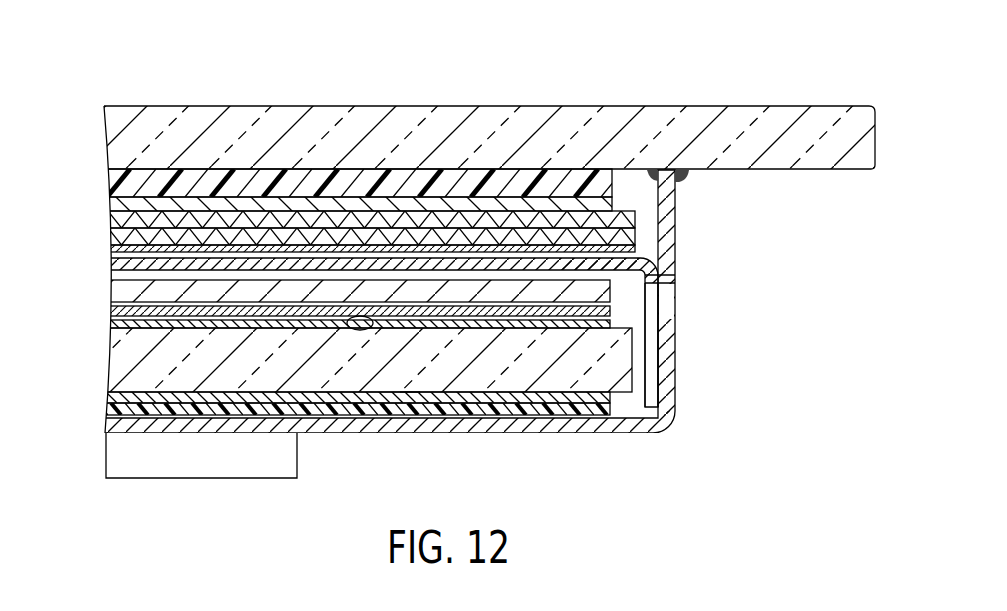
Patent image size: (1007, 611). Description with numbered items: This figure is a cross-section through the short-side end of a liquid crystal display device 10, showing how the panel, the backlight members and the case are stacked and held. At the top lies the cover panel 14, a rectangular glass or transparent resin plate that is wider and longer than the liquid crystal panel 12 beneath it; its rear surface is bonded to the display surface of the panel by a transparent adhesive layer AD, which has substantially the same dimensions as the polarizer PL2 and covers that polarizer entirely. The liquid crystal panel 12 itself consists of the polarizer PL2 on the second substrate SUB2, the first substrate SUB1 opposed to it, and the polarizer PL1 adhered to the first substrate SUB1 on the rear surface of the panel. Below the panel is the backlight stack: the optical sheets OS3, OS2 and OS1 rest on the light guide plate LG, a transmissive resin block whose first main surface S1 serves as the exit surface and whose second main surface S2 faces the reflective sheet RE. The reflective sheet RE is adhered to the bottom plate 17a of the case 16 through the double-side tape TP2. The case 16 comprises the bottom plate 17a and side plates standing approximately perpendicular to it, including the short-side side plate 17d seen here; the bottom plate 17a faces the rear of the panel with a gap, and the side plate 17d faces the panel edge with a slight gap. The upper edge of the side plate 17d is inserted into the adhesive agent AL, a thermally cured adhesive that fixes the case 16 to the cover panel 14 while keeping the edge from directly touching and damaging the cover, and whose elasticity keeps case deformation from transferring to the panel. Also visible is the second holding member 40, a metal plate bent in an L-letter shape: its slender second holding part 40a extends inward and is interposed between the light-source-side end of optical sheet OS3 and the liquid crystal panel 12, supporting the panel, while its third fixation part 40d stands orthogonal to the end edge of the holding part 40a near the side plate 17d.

The display device 10 is at (650, 82).
The liquid crystal panel 12 is at (328, 172).
The cover panel 14 is at (243, 116).
The case 16 is at (417, 347).
The bottom plate 17a is at (485, 423).
The side plate 17d is at (668, 238).
The second holding member 40 is at (420, 237).
The second holding part 40a is at (602, 262).
The third fixation part 40d is at (650, 366).
The adhesive layer AD is at (163, 183).
The adhesive agent AL is at (680, 178).
The polarizer PL2 is at (112, 203).
The second substrate SUB2 is at (115, 218).
The first substrate SUB1 is at (120, 243).
The polarizer PL1 is at (115, 248).
The optical sheet OS3 is at (105, 283).
The optical sheet OS2 is at (106, 309).
The optical sheet OS1 is at (104, 327).
The light guide plate LG is at (104, 364).
The reflective sheet RE is at (108, 398).
The double-side tape TP2 is at (104, 416).
The first main surface S1 is at (350, 332).
The second main surface S2 is at (408, 395).